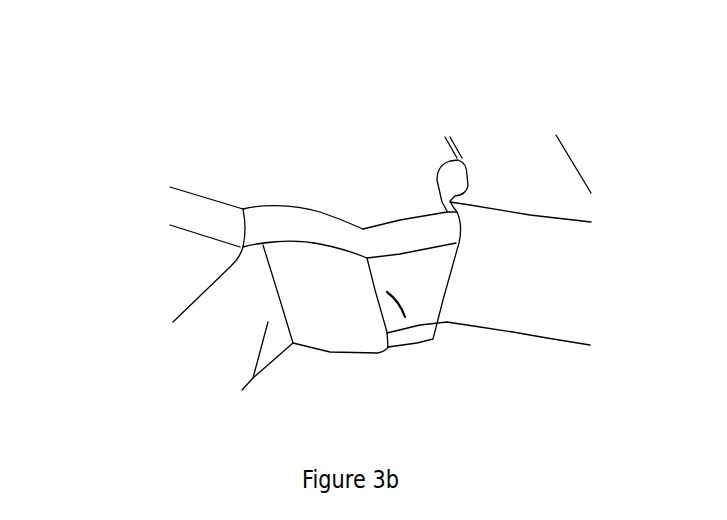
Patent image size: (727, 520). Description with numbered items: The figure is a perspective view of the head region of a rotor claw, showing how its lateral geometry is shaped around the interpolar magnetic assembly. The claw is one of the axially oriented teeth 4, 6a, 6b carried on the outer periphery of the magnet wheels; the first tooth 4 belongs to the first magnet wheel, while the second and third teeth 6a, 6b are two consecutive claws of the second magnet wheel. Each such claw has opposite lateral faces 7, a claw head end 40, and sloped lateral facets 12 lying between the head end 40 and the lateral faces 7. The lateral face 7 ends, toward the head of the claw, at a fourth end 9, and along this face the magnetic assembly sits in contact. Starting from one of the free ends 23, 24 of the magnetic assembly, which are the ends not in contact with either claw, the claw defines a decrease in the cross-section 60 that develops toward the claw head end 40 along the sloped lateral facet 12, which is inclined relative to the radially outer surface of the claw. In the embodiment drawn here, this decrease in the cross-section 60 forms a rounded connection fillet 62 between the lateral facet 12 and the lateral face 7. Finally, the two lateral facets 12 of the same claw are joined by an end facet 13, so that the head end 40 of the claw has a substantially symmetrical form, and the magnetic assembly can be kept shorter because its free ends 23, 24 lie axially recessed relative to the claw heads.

The lateral face 7 is at (190, 210).
The fourth end 9 is at (243, 176).
The decrease in the cross-section 60 is at (243, 176).
The rounded connection fillet 62 is at (243, 209).
The lateral facet 12 is at (300, 224).
The end facet 13 is at (402, 222).
The claw head end 40 is at (405, 317).
The tooth 4 is at (566, 178).
The tooth 6a is at (566, 178).
The third claw 6b is at (410, 185).
The first free end 23 is at (422, 350).
The second free end 24 is at (253, 378).